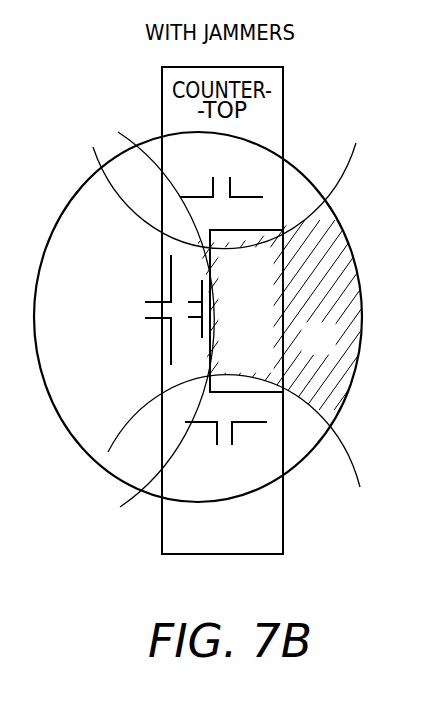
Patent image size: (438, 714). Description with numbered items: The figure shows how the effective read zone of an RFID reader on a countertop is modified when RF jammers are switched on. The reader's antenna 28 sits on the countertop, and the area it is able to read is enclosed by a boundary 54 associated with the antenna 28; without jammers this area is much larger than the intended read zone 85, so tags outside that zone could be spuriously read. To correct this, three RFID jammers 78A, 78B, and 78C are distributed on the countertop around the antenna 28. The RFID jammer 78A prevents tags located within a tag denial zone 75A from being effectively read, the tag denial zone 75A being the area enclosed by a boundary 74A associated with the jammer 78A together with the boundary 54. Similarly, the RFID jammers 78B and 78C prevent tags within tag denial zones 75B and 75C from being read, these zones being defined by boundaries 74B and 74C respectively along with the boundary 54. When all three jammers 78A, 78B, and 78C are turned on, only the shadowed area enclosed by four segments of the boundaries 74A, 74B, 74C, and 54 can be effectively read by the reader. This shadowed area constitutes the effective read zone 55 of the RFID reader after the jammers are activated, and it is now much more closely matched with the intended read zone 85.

The antenna 28 is at (202, 291).
The boundary 54 is at (348, 241).
The effective read zone 55 is at (332, 352).
The boundary 74A is at (131, 497).
The boundary 74B is at (345, 162).
The boundary 74C is at (345, 452).
The tag denial zone 75A is at (88, 333).
The tag denial zone 75B is at (215, 168).
The tag denial zone 75C is at (225, 492).
The RFID jammer 78A is at (155, 301).
The RFID jammer 78B is at (247, 197).
The RFID jammer 78C is at (252, 423).
The intended read zone 85 is at (273, 263).